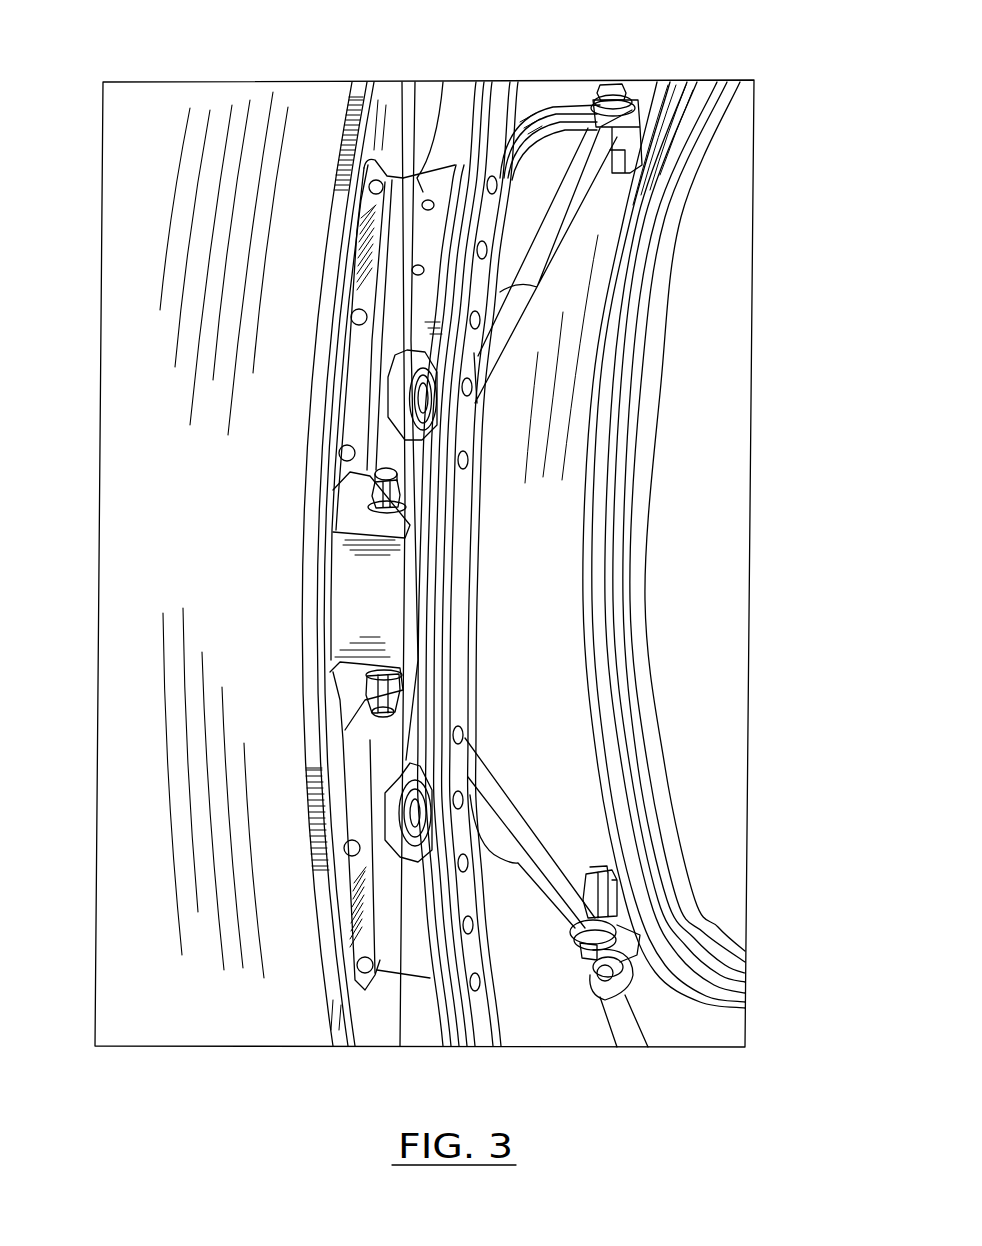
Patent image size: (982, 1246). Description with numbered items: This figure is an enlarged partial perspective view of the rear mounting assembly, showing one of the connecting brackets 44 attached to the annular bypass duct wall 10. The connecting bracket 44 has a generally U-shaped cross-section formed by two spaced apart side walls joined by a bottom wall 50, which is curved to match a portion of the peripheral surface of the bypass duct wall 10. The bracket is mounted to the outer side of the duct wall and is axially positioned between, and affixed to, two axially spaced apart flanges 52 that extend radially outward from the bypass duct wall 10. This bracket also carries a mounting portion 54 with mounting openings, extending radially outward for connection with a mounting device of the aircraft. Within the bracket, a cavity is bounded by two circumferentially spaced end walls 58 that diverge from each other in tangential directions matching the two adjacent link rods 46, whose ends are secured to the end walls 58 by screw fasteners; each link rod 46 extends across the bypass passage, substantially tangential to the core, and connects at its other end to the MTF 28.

The annular bypass duct wall 10 is at (208, 112).
The MTF 28 is at (597, 524).
The connecting bracket 44 is at (350, 405).
The link rod 46 is at (577, 160).
The bottom wall 50 is at (430, 188).
The flange 52 is at (355, 97).
The mounting portion 54 is at (410, 357).
The end wall 58 is at (335, 504).